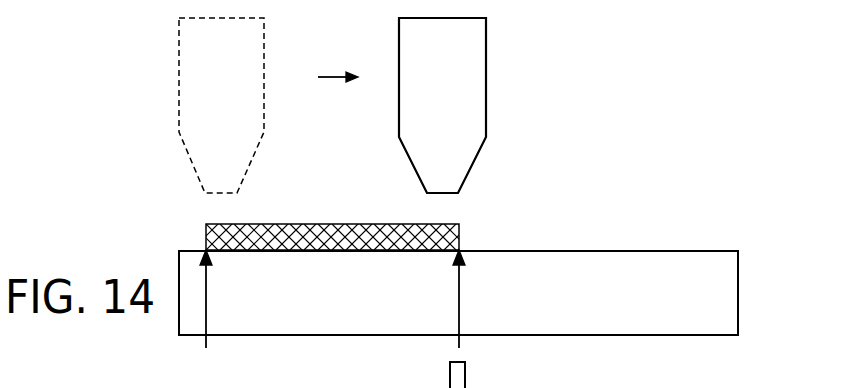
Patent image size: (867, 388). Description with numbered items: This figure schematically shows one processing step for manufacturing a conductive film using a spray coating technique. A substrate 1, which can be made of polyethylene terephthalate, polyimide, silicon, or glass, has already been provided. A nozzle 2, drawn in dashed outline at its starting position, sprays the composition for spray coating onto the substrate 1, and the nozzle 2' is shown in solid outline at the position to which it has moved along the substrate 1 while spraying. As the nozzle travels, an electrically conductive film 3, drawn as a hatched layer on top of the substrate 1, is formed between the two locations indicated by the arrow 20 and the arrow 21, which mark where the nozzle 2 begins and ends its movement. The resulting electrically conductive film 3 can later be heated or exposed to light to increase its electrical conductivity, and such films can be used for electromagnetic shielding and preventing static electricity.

The substrate 1 is at (726, 297).
The nozzle 2 is at (196, 105).
The nozzle (moved position) 2' is at (472, 105).
The electrically conductive film 3 is at (205, 235).
The arrow 20 is at (206, 348).
The arrow 21 is at (459, 348).